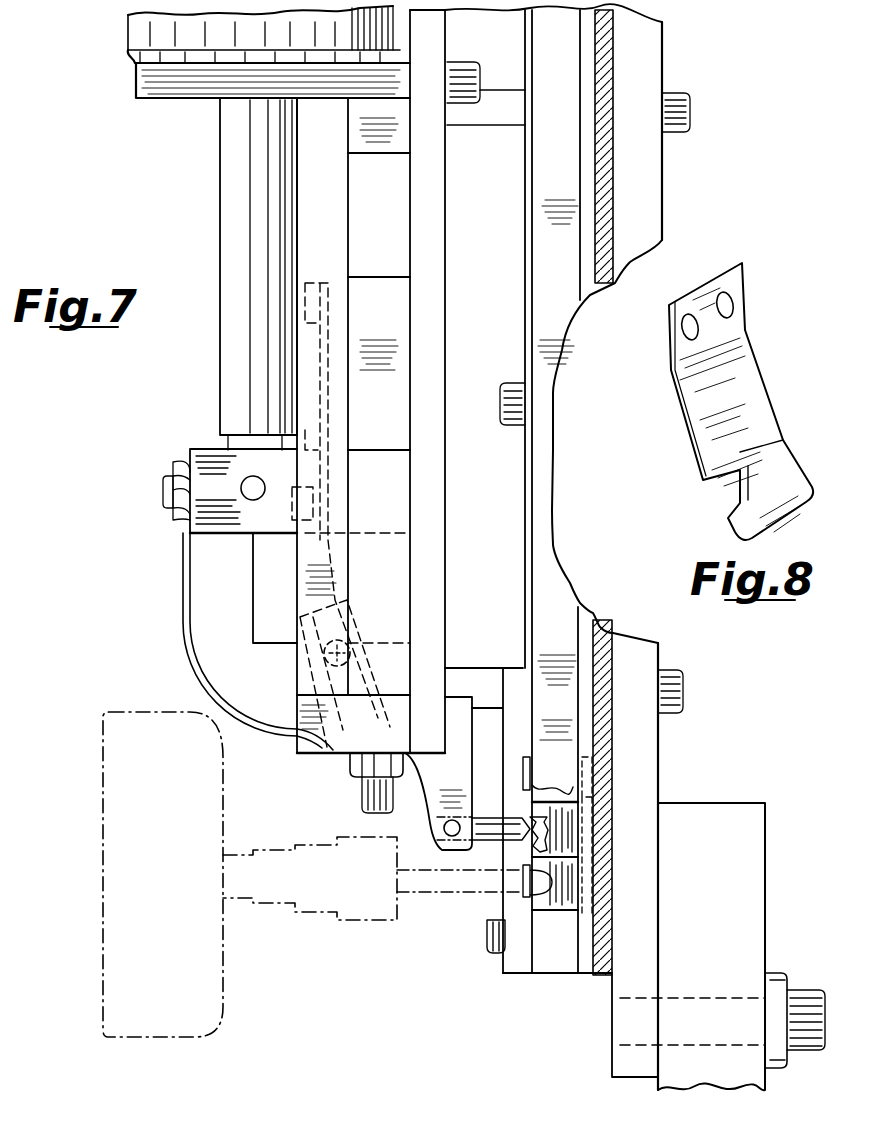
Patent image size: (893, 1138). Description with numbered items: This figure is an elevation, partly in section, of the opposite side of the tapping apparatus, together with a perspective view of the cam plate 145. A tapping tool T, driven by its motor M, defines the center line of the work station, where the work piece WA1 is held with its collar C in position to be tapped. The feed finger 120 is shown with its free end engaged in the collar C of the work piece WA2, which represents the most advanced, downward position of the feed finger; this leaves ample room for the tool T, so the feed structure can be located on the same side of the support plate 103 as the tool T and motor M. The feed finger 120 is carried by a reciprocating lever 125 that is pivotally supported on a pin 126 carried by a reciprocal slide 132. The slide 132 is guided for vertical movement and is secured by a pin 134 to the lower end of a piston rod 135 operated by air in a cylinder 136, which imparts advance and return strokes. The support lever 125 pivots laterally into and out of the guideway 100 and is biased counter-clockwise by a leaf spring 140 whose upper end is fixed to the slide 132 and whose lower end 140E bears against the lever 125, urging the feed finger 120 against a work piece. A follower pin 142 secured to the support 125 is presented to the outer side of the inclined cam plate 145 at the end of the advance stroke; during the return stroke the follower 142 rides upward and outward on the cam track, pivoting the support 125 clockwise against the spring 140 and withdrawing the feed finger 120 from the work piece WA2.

In FIG. 7, the guideway 100 is at (599, 942).
In FIG. 7, the support plate 103 is at (642, 199).
In FIG. 7, the feed finger 120 is at (439, 779).
In FIG. 7, the feed finger support lever 125 is at (310, 662).
In FIG. 7, the pin 126 is at (323, 655).
In FIG. 7, the reciprocal slide 132 is at (222, 530).
In FIG. 7, the pin 134 is at (258, 492).
In FIG. 7, the piston rod 135 is at (246, 385).
In FIG. 7, the cylinder 136 is at (215, 38).
In FIG. 7, the leaf spring 140 is at (185, 650).
In FIG. 7, the lower end of leaf spring 140E is at (321, 751).
In FIG. 7, the follower pin 142 is at (352, 755).
In FIG. 7, the cam plate 145 is at (345, 542).
In FIG. 8, the cam plate 145 is at (736, 378).
In FIG. 7, the work piece WA1 is at (561, 913).
In FIG. 7, the work piece WA2 is at (569, 812).
In FIG. 7, the collar C is at (520, 895).
In FIG. 7, the tapping tool T is at (420, 912).
In FIG. 7, the motor M is at (153, 855).